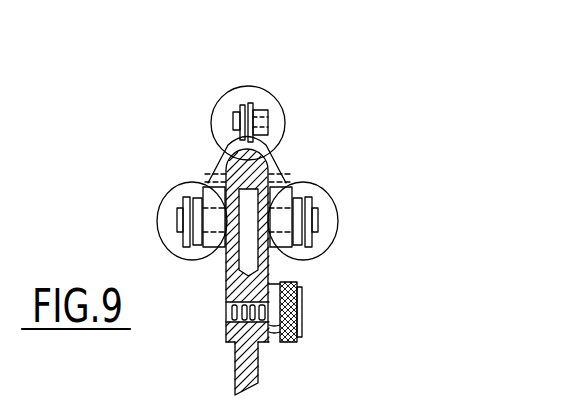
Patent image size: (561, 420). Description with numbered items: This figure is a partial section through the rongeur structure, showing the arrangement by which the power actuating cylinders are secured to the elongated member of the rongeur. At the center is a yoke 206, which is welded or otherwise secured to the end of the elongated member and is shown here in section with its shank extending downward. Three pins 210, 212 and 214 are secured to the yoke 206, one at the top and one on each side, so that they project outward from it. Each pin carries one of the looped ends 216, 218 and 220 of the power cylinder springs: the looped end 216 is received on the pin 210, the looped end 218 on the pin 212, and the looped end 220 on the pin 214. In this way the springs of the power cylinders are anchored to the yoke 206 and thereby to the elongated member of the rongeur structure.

The yoke 206 is at (279, 164).
The pin 210 is at (319, 222).
The pin 212 is at (178, 218).
The pin 214 is at (233, 122).
The looped end 216 is at (305, 188).
The looped end 218 is at (186, 252).
The looped end 220 is at (260, 118).